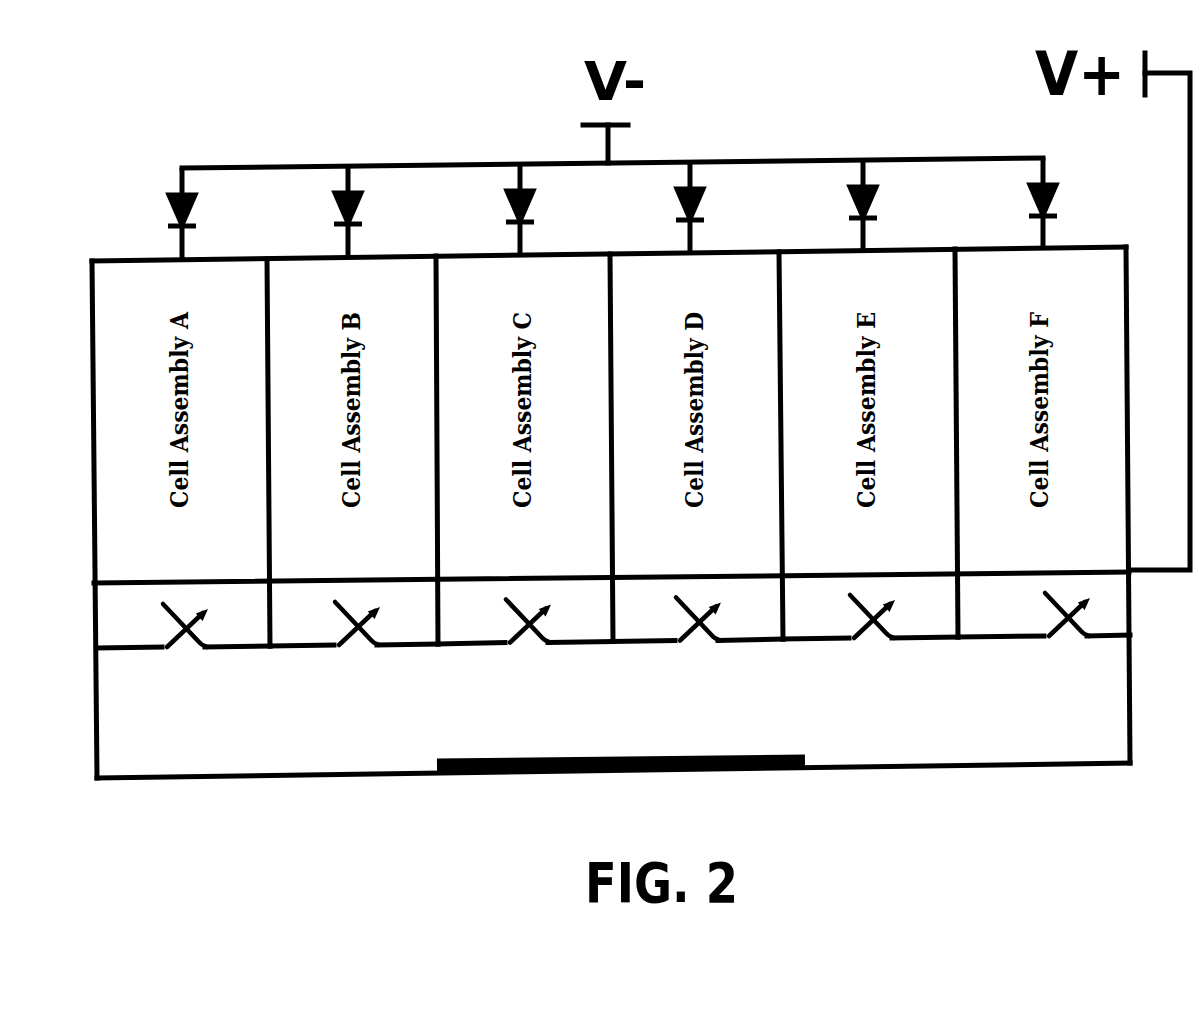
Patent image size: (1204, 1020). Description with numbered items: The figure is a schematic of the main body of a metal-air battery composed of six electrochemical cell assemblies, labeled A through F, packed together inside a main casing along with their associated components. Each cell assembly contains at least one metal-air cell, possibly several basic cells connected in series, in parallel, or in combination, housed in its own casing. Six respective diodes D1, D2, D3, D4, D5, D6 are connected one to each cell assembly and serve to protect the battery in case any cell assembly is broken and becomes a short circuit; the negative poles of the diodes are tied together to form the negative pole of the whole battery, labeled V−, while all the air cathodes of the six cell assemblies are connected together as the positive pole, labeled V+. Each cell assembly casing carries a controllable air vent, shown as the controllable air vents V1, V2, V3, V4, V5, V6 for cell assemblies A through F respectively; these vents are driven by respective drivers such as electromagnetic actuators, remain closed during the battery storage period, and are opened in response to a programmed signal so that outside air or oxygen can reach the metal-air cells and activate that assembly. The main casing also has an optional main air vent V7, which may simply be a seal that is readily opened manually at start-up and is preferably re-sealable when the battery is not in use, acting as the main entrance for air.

The diode D1 is at (155, 214).
The diode D2 is at (324, 212).
The diode D3 is at (495, 209).
The diode D4 is at (666, 207).
The diode D5 is at (839, 205).
The diode D6 is at (1016, 203).
The controllable air vent V1 is at (184, 654).
The controllable air vent V2 is at (358, 652).
The controllable air vent V3 is at (528, 650).
The controllable air vent V4 is at (700, 647).
The controllable air vent V5 is at (874, 645).
The controllable air vent V6 is at (1069, 642).
The main air vent V7 is at (621, 788).